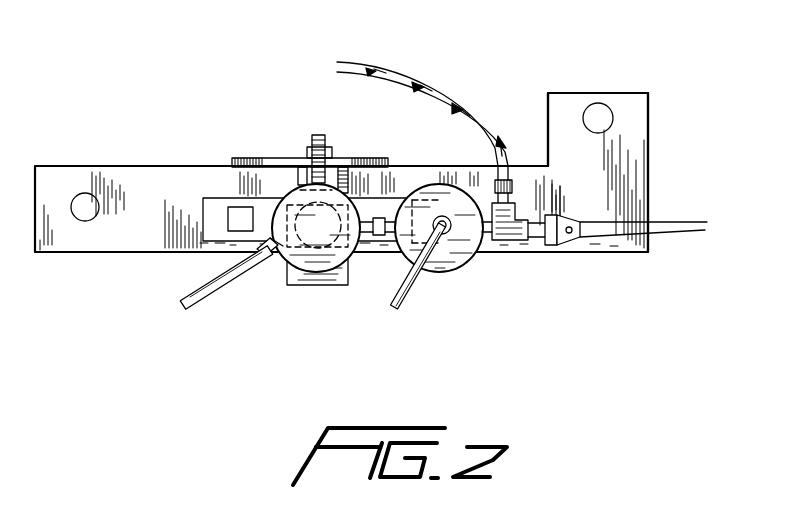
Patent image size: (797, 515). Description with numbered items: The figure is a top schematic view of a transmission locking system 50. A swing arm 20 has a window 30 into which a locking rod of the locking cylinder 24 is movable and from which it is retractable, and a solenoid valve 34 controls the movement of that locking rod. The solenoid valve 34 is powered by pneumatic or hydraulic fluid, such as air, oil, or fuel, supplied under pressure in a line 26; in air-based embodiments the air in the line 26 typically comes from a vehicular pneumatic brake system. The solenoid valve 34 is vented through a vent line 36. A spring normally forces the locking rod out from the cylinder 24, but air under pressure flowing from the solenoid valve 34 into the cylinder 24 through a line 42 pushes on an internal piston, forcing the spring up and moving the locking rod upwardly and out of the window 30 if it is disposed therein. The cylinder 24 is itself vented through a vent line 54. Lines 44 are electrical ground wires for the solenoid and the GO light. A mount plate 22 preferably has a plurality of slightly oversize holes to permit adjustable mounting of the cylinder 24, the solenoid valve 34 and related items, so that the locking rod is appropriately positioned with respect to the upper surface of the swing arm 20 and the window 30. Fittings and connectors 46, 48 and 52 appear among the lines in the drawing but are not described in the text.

The swing arm 20 is at (210, 198).
The mount plate 22 is at (628, 137).
The locking cylinder 24 is at (268, 200).
The line 26 is at (405, 73).
The window 30 is at (237, 207).
The solenoid valve 34 is at (435, 276).
The vent line 36 is at (393, 293).
The line 42 is at (368, 215).
The electrical ground wires 44 is at (693, 223).
The cable connector 46 is at (562, 243).
The coupling 48 is at (522, 241).
The transmission locking system 50 is at (133, 152).
The elbow fitting 52 is at (487, 253).
The vent line 54 is at (205, 302).